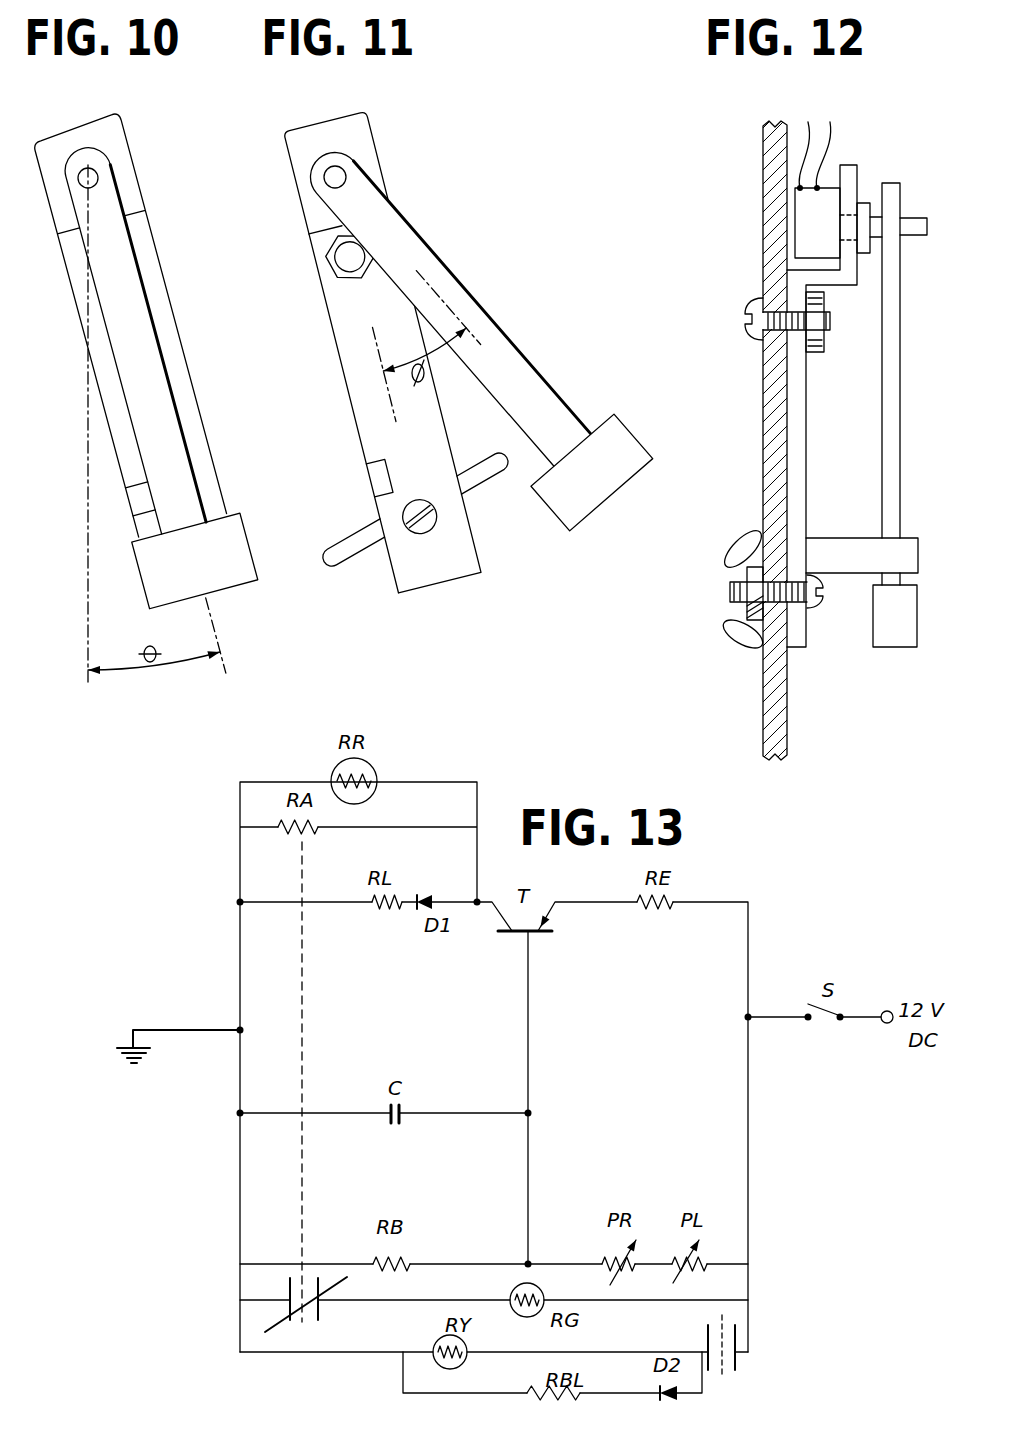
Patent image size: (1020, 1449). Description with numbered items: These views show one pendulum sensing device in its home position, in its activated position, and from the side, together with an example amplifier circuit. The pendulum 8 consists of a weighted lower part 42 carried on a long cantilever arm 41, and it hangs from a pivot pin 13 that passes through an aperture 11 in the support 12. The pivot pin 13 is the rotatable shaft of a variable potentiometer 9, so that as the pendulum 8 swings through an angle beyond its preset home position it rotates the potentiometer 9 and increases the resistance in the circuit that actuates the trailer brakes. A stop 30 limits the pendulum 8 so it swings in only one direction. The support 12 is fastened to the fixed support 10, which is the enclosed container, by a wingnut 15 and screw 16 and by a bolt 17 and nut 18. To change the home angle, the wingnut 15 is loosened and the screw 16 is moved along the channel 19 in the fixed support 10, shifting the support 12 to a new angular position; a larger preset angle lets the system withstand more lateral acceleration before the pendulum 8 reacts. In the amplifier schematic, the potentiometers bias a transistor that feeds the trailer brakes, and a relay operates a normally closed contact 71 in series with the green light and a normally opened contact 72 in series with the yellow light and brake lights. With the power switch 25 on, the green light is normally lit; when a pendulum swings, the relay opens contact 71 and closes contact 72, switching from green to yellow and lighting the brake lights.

In FIG. 10, the pendulum 8 is at (178, 470).
In FIG. 12, the variable potentiometer 9 is at (825, 198).
In FIG. 12, the fixed support 10 is at (770, 468).
In FIG. 12, the aperture 11 is at (853, 210).
In FIG. 10, the support 12 is at (182, 377).
In FIG. 11, the support 12 is at (432, 427).
In FIG. 12, the support 12 is at (807, 486).
In FIG. 10, the pivot pin 13 is at (94, 182).
In FIG. 12, the pivot pin 13 is at (918, 236).
In FIG. 12, the wingnut 15 is at (740, 640).
In FIG. 11, the screw 16 is at (425, 527).
In FIG. 12, the screw 16 is at (815, 610).
In FIG. 12, the bolt 17 is at (822, 310).
In FIG. 12, the nut 18 is at (760, 343).
In FIG. 11, the channel 19 is at (490, 477).
In FIG. 13, the power switch 25 is at (820, 1028).
In FIG. 10, the stop 30 is at (143, 505).
In FIG. 11, the stop 30 is at (378, 480).
In FIG. 12, the stop 30 is at (910, 555).
In FIG. 11, the long cantilever arm 41 is at (500, 357).
In FIG. 11, the weighted lower part 42 is at (612, 433).
In FIG. 13, the normally closed contact 71 is at (322, 1312).
In FIG. 13, the normally opened contact 72 is at (738, 1366).